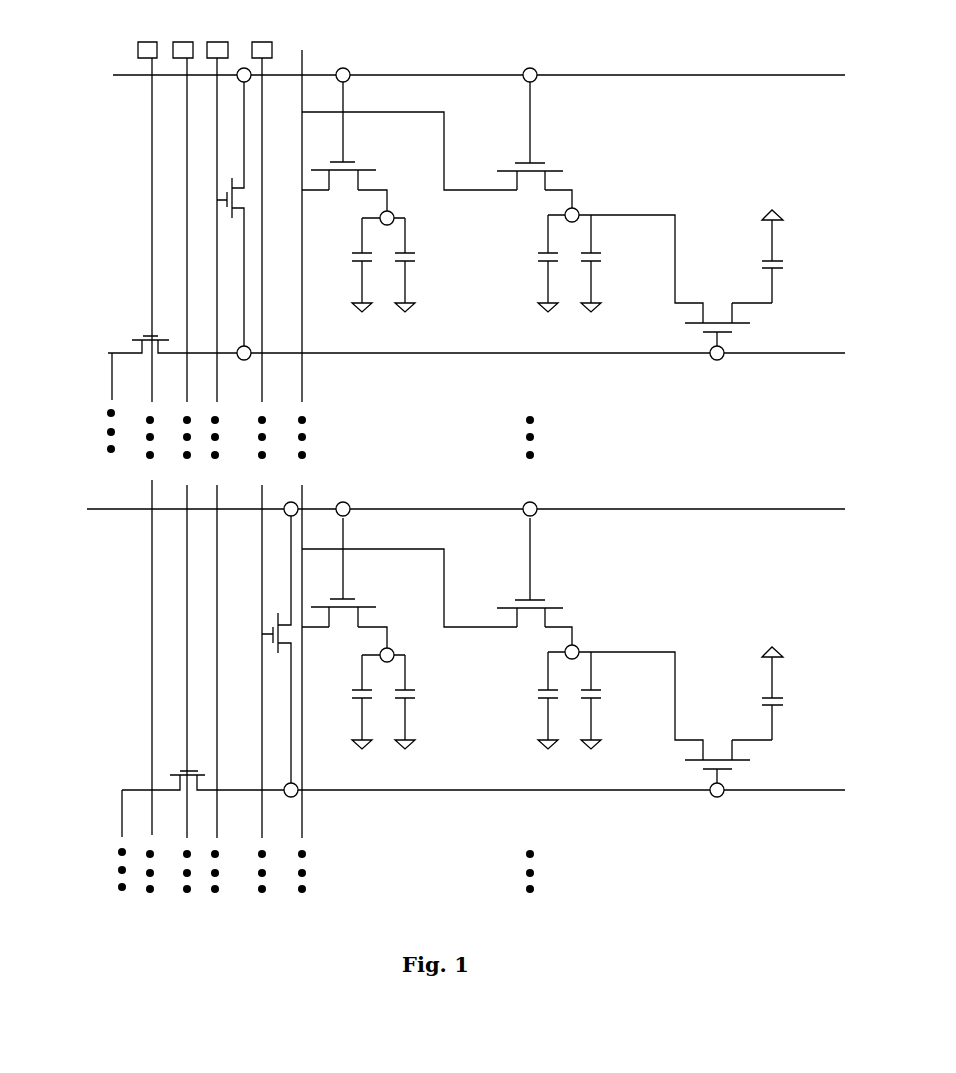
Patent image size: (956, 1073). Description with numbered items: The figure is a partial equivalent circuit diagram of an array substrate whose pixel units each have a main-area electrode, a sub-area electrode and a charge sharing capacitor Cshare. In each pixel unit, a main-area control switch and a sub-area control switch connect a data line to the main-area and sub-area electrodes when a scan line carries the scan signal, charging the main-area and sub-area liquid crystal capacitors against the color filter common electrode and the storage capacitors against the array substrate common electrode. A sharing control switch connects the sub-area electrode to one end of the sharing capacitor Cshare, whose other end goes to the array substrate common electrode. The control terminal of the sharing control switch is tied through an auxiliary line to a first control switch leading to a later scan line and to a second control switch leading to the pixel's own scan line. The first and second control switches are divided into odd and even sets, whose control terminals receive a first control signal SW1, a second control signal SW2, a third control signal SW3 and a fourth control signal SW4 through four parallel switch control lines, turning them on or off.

The first control signal SW1 is at (147, 428).
The second control signal SW2 is at (185, 430).
The third control signal SW3 is at (222, 430).
The fourth control signal SW4 is at (259, 430).
The charge sharing capacitor Cshare is at (799, 475).